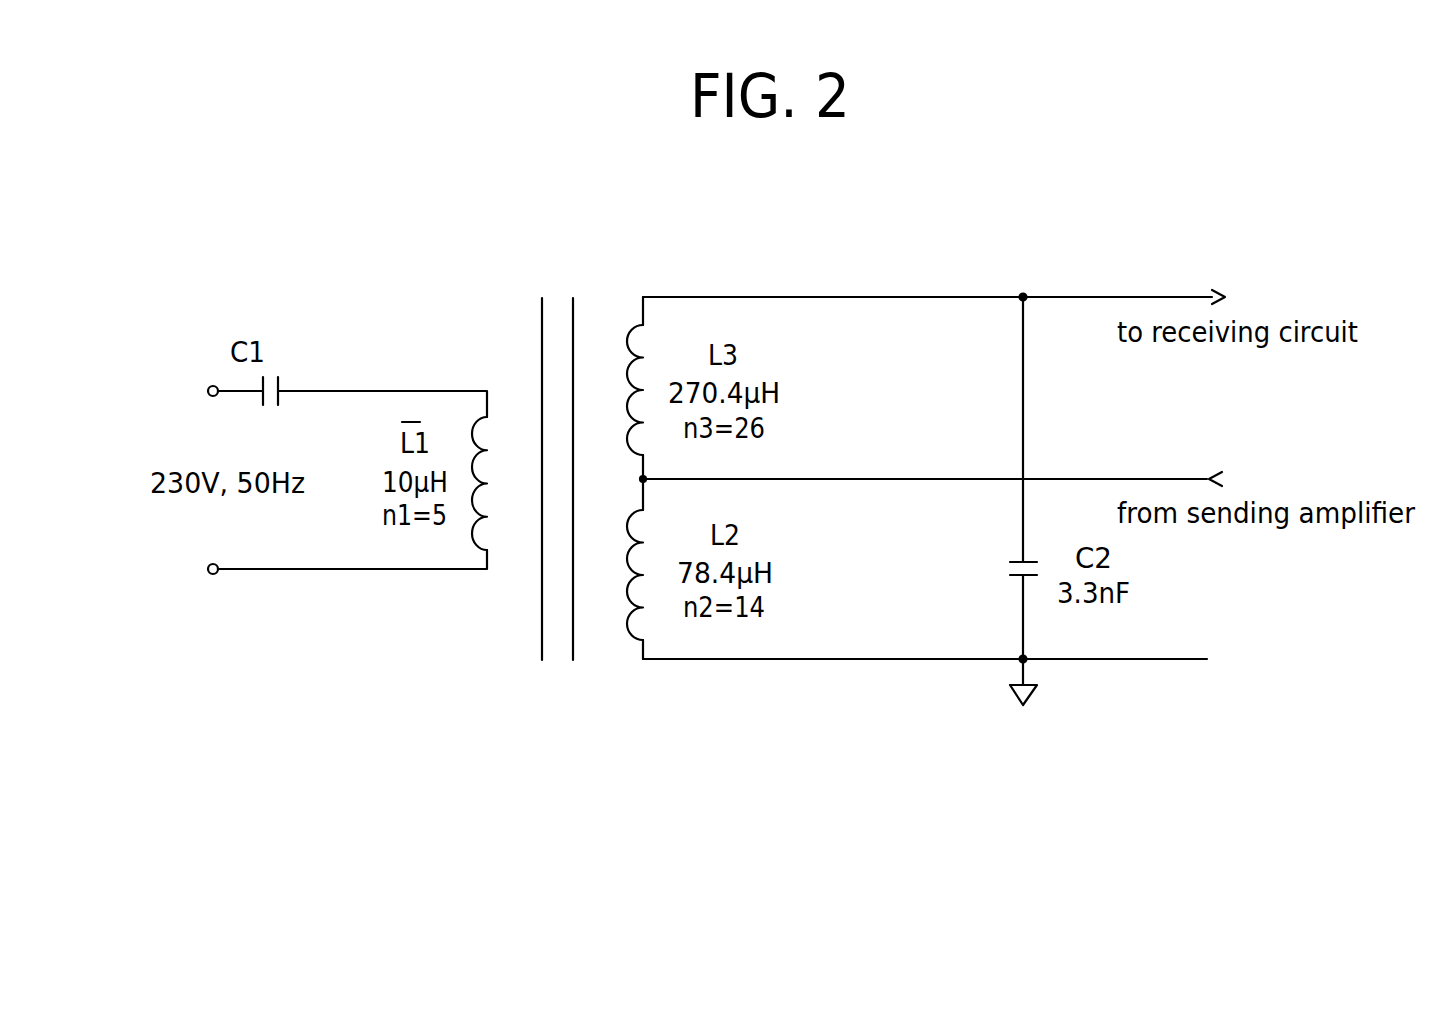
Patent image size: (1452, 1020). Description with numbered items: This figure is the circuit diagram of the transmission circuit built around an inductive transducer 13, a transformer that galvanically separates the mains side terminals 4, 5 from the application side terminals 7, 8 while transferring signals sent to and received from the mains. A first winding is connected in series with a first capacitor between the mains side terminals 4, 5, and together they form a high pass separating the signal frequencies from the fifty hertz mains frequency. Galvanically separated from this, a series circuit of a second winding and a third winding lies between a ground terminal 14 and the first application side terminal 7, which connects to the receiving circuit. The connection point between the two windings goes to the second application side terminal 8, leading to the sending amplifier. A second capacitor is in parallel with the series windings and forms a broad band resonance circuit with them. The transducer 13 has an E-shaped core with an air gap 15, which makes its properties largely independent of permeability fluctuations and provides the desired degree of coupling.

The mains side terminal 4 is at (208, 569).
The mains side terminal 5 is at (208, 391).
The first application side terminal 7 is at (1192, 297).
The second application side terminal 8 is at (1180, 479).
The inductive transducer 13 is at (540, 447).
The ground terminal 14 is at (1018, 673).
The air gap 15 is at (540, 633).